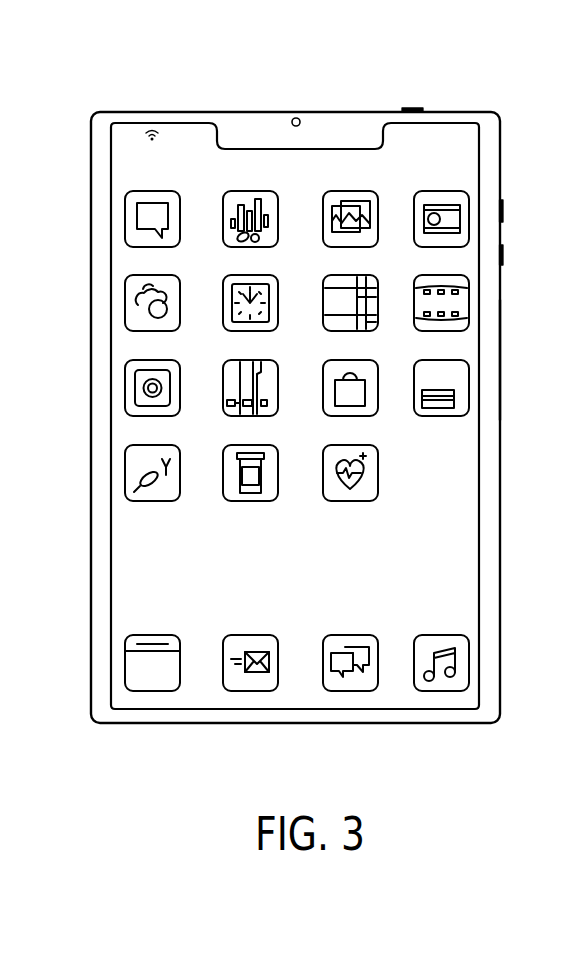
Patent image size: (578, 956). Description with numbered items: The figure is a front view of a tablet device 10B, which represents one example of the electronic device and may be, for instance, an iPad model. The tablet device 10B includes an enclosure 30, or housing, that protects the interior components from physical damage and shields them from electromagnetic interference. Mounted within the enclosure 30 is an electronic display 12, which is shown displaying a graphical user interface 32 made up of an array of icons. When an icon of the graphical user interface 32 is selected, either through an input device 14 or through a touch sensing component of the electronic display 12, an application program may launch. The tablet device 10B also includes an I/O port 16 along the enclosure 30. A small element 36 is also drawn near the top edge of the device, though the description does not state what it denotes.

The tablet device 10B is at (104, 75).
The electronic display 12 is at (479, 408).
The input device 14 is at (412, 109).
The I/O port 16 is at (167, 112).
The enclosure 30 is at (500, 362).
The graphical user interface 32 is at (457, 489).
The camera 36 is at (300, 122).